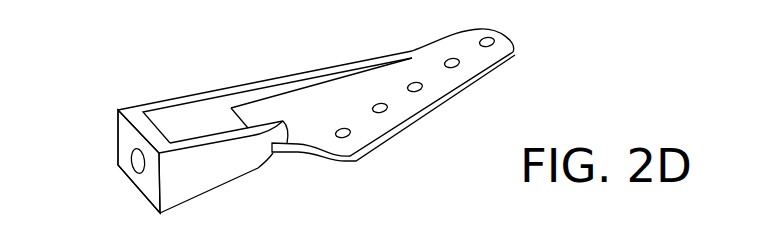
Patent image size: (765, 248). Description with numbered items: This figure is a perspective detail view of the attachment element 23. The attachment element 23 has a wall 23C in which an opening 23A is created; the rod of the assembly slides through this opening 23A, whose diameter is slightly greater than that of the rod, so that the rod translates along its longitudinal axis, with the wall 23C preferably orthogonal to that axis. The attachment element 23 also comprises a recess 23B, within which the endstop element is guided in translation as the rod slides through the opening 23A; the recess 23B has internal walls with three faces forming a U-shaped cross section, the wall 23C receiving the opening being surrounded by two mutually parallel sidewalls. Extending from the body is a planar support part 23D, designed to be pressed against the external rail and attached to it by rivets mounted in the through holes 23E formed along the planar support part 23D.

The attachment element 23 is at (126, 71).
The opening 23A is at (136, 166).
The recess 23B is at (193, 122).
The wall 23C is at (127, 135).
The planar support part 23D is at (470, 52).
The through holes 23E is at (412, 93).